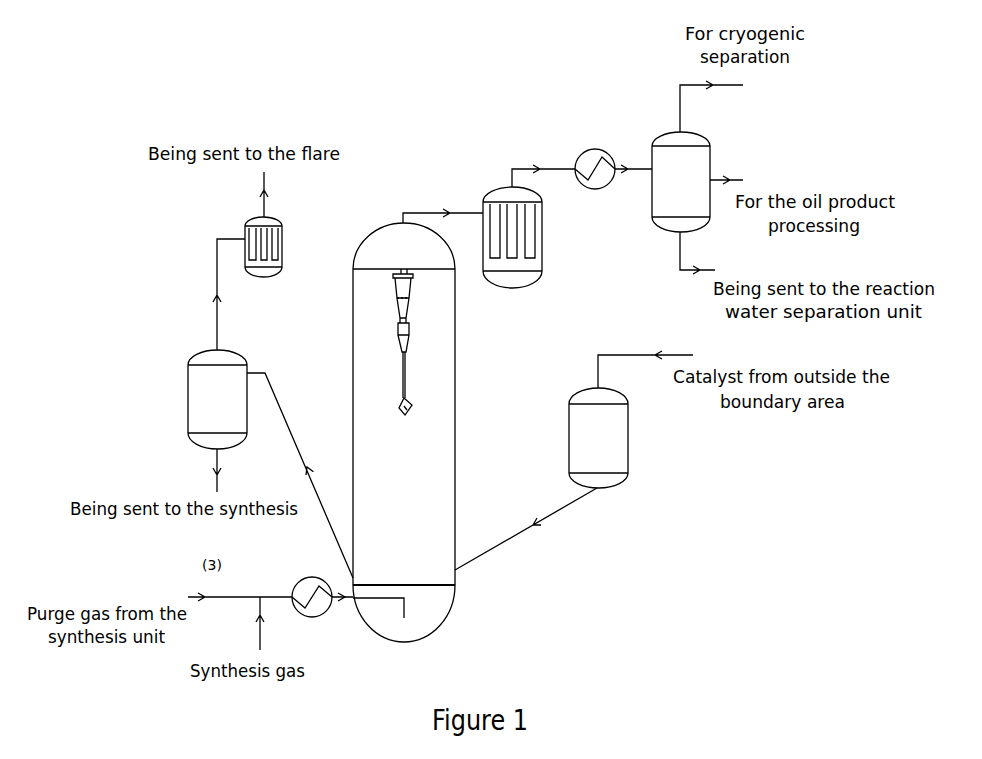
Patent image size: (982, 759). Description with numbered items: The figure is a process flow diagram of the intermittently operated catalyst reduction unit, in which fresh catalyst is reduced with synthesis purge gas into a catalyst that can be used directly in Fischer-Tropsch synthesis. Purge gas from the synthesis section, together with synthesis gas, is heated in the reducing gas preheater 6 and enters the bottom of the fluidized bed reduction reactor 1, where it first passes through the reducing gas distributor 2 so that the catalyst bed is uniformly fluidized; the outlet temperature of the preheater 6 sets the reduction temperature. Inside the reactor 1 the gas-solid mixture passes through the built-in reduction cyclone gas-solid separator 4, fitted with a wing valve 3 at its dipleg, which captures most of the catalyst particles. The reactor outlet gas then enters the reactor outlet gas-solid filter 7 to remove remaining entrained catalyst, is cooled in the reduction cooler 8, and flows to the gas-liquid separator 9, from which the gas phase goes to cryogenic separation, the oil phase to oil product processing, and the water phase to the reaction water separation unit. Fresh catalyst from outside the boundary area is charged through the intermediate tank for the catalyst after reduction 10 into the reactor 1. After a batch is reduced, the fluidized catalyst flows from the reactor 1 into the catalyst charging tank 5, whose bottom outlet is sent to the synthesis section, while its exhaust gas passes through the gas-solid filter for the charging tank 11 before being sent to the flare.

The fluidized bed reduction reactor 1 is at (455, 482).
The reducing gas distributor 2 is at (403, 585).
The wing valve 3 is at (405, 415).
The reduction cyclone gas-solid separator 4 is at (409, 330).
The catalyst charging tank 5 is at (247, 360).
The reducing gas preheater 6 is at (313, 619).
The reactor outlet gas-solid filter 7 is at (512, 288).
The reduction cooler 8 is at (592, 150).
The gas-liquid separator 9 is at (665, 130).
The intermediate tank for the catalyst after reduction 10 is at (628, 440).
The gas-solid filter for the charging tank 11 is at (282, 247).